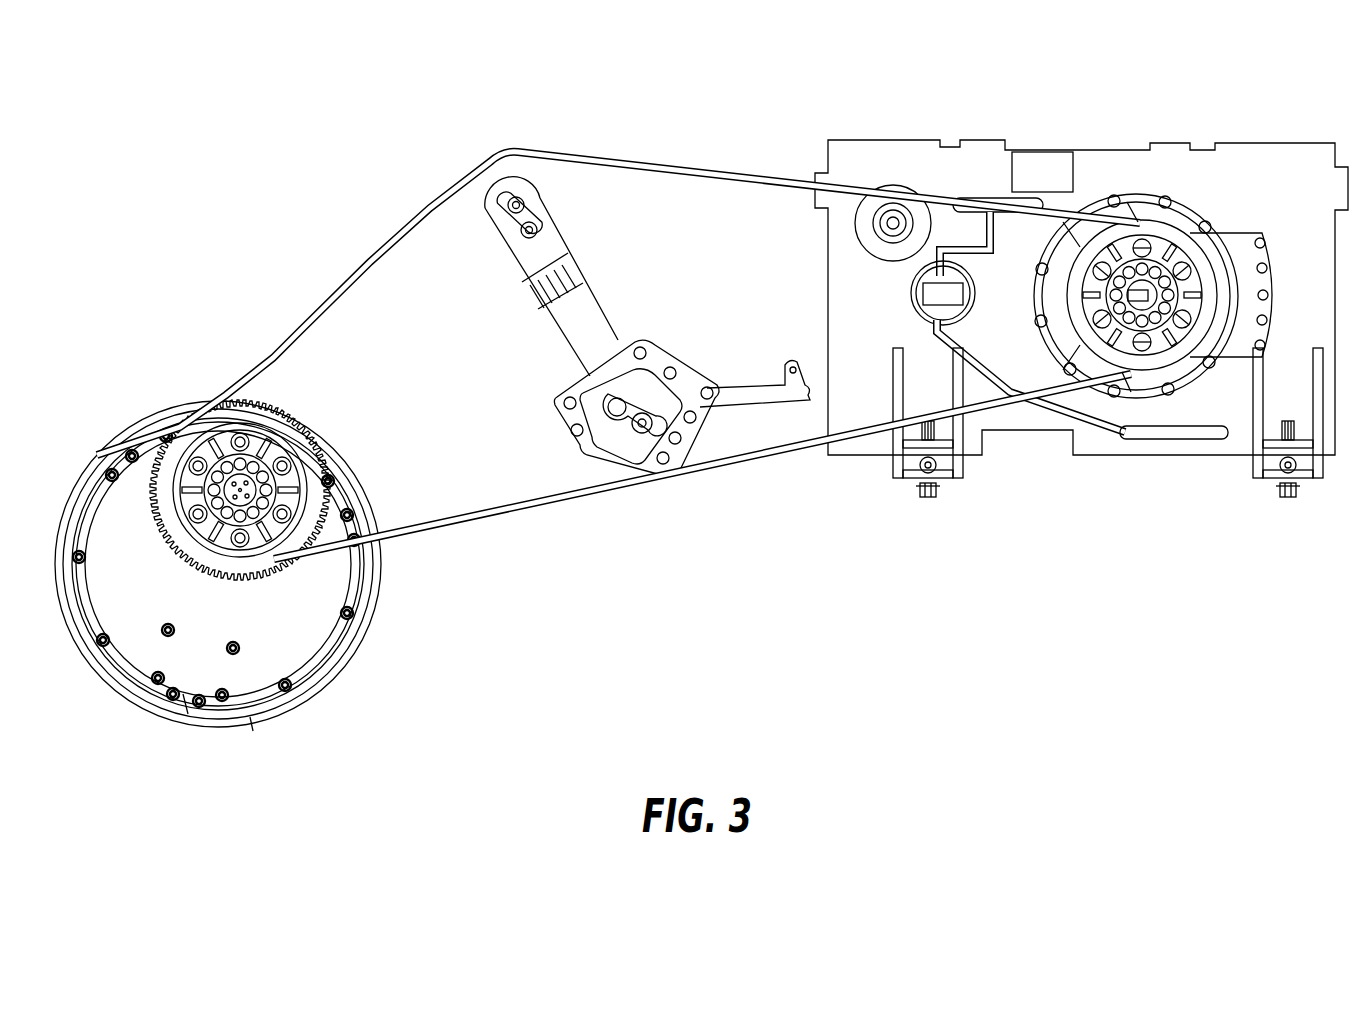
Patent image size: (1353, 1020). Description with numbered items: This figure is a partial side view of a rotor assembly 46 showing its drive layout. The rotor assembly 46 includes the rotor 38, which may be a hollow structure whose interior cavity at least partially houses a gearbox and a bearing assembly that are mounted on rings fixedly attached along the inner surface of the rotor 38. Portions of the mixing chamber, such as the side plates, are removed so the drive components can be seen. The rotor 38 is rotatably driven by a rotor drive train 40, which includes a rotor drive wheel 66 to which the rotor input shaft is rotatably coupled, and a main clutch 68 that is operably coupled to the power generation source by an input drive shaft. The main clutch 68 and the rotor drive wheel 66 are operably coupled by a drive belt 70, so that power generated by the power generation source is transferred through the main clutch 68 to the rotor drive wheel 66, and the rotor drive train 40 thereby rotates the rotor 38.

The rotor 38 is at (250, 720).
The rotor drive train 40 is at (752, 494).
The rotor assembly 46 is at (730, 98).
The rotor drive wheel 66 is at (173, 462).
The main clutch 68 is at (1163, 232).
The drive belt 70 is at (398, 239).